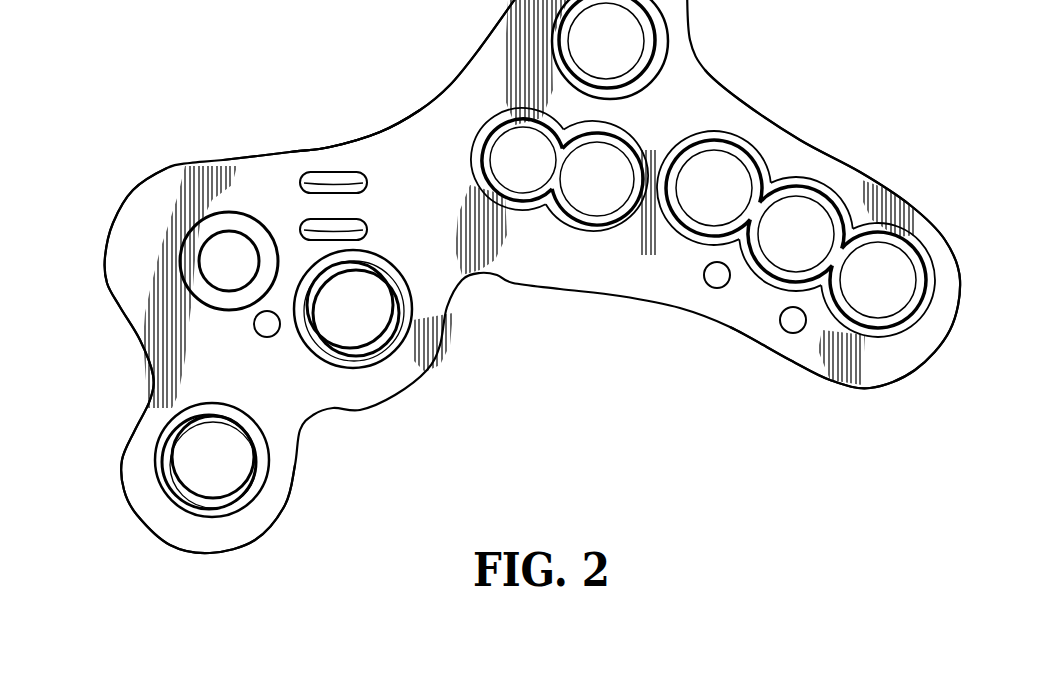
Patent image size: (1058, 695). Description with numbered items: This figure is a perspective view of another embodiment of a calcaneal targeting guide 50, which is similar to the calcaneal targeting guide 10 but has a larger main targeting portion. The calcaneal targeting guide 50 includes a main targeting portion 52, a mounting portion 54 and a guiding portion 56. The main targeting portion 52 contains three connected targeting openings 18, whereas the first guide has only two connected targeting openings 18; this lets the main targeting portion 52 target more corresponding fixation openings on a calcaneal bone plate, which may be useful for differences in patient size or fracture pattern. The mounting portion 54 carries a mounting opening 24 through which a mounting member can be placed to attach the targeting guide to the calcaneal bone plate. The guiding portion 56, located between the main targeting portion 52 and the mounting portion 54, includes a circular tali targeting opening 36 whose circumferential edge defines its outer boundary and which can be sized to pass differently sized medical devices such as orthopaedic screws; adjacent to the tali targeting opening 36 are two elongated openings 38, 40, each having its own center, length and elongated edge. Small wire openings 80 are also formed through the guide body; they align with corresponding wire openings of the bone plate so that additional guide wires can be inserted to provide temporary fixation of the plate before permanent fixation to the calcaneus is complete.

The calcaneal targeting guide 10 is at (533, 276).
The targeting openings 18 is at (233, 465).
The mounting opening 24 is at (218, 247).
The tali targeting opening 36 is at (360, 328).
The elongated opening 38 is at (347, 234).
The elongated opening 40 is at (346, 173).
The calcaneal targeting guide 50 is at (378, 72).
The main targeting portion 52 is at (790, 64).
The mounting portion 54 is at (115, 355).
The guiding portion 56 is at (323, 131).
The wire openings 80 is at (267, 337).